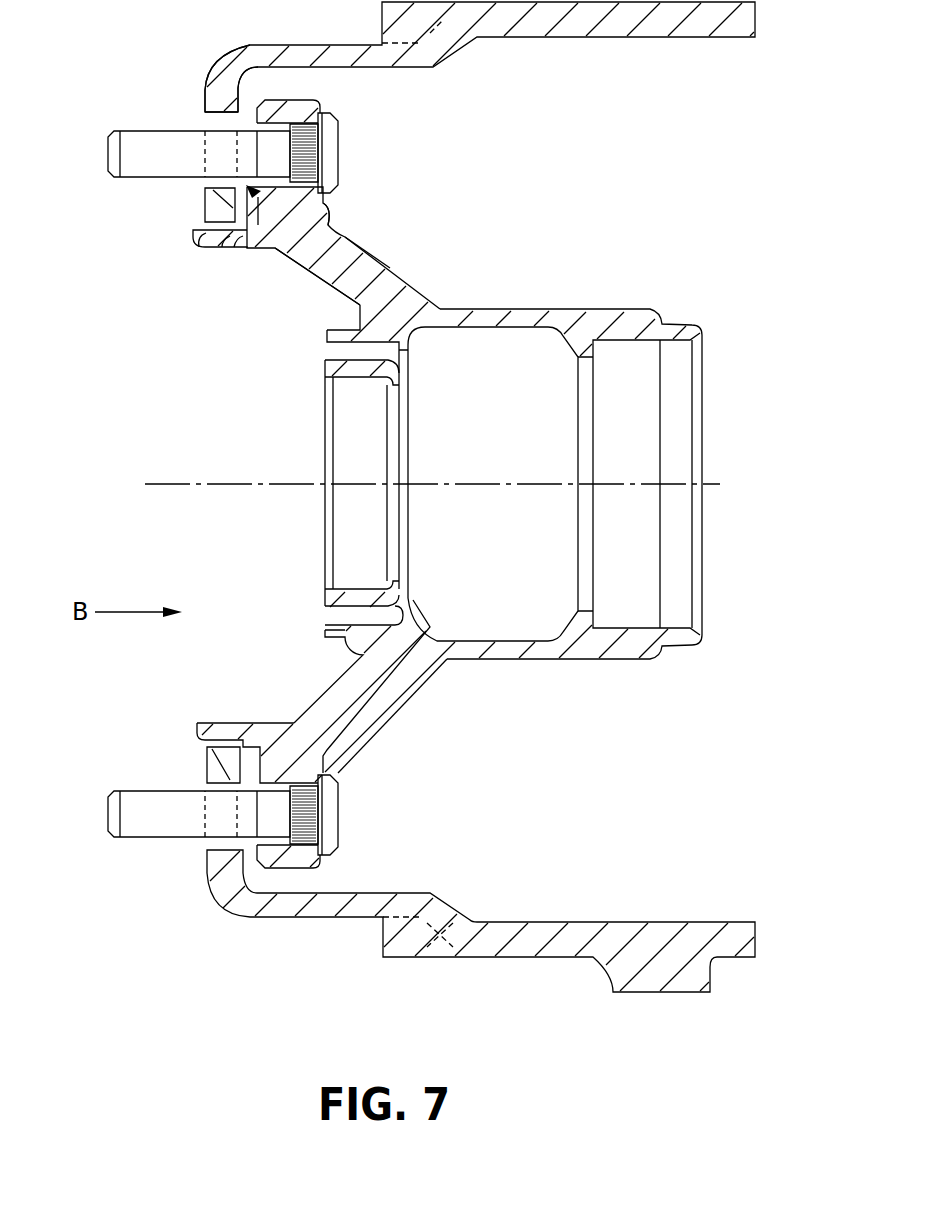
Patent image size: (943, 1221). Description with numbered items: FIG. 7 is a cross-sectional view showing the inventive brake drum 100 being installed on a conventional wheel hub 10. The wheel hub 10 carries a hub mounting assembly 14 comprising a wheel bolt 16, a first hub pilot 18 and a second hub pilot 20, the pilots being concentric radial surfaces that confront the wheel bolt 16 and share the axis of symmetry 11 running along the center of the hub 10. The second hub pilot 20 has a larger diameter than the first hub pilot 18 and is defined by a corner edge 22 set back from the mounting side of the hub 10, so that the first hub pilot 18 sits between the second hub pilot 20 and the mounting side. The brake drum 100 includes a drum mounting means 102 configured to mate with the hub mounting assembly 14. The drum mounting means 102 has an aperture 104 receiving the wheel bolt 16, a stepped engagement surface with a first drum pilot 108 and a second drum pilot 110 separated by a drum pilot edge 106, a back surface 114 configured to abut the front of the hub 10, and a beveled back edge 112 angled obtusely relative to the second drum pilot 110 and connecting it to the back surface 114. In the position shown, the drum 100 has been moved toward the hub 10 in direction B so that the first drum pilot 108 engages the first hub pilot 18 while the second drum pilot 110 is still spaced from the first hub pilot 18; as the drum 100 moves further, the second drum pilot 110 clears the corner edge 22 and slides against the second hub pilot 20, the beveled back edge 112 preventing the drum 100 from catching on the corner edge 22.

The wheel hub 10 is at (560, 257).
The axis of symmetry 11 is at (243, 482).
The hub mounting assembly 14 is at (323, 192).
The wheel bolt 16 is at (115, 128).
The first hub pilot 18 is at (250, 222).
The second hub pilot 20 is at (347, 248).
The corner edge 22 is at (338, 256).
The brake drum 100 is at (553, 80).
The drum mounting means 102 is at (140, 198).
The aperture 104 is at (207, 124).
The drum pilot edge 106 is at (226, 248).
The first drum pilot 108 is at (198, 248).
The second drum pilot 110 is at (238, 235).
The beveled back edge 112 is at (238, 233).
The back surface 114 is at (206, 209).